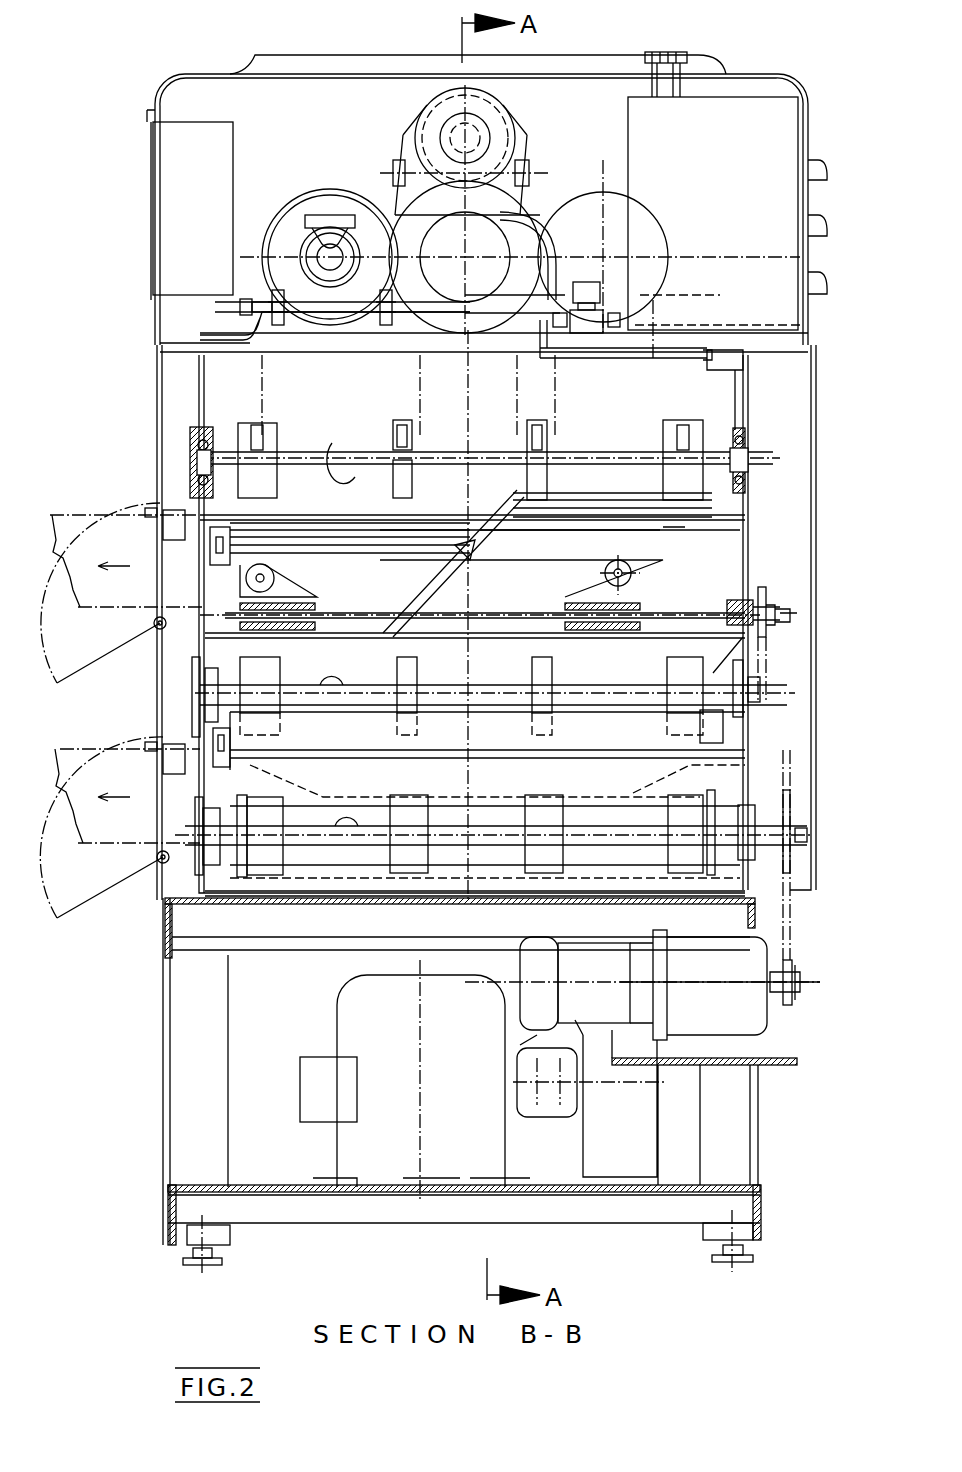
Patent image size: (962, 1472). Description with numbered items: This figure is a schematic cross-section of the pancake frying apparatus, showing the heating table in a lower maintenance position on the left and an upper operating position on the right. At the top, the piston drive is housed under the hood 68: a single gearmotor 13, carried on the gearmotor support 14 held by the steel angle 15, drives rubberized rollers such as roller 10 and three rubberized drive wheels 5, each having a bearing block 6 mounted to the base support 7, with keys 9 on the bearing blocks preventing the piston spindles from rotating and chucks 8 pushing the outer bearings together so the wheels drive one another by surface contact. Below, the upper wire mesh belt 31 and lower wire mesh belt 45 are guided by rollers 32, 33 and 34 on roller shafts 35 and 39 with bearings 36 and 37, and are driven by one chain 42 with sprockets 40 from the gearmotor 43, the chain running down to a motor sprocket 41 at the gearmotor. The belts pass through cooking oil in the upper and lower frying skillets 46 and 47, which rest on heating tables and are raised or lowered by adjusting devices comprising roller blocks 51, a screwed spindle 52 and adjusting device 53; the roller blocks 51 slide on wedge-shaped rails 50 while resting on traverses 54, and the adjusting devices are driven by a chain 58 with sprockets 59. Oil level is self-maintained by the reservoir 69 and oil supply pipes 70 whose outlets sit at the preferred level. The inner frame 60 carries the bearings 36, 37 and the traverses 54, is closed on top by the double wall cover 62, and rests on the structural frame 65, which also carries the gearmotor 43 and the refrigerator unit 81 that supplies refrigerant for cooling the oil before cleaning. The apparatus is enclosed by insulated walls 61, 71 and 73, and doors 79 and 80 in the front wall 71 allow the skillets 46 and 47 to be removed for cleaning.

The rubberized drive wheel 5 is at (310, 200).
The bearing block 6 is at (395, 215).
The base support 7 is at (268, 328).
The chuck 8 is at (240, 302).
The key 9 is at (322, 224).
The rubberized roller 10 is at (478, 165).
The gearmotor 13 is at (498, 112).
The gearmotor support 14 is at (562, 200).
The steel angle 15 is at (528, 345).
The upper wire mesh belt 31 is at (478, 495).
The roller 32 is at (257, 425).
The roller 33 is at (345, 455).
The roller 34 is at (259, 876).
The roller shaft 35 is at (475, 450).
The bearing 36 is at (747, 480).
The bearing 37 is at (192, 470).
The roller shaft 39 is at (455, 845).
The sprocket 40 is at (790, 805).
The motor pulley 41 is at (800, 1000).
The chain 42 is at (795, 942).
The gearmotor 43 is at (512, 1035).
The lower wire mesh belt 45 is at (340, 878).
The upper frying skillet 46 is at (715, 508).
The lower frying skillet 47 is at (750, 727).
The rail 50 is at (512, 562).
The roller block 51 is at (300, 583).
The screwed spindle 52 is at (610, 618).
The adjusting device 53 is at (660, 632).
The traverse 54 is at (420, 632).
The chain 58 is at (770, 660).
The sprocket 59 is at (768, 607).
The inner frame 60 is at (197, 650).
The insulated wall 61 is at (814, 470).
The double wall cover 62 is at (402, 338).
The structural frame 65 is at (228, 1002).
The hood 68 is at (147, 114).
The cooking oil reservoir 69 is at (788, 95).
The oil supply pipe 70 is at (655, 355).
The front wall 71 is at (157, 432).
The insulated wall 73 is at (165, 1025).
The door 79 is at (95, 905).
The door 80 is at (90, 672).
The refrigerator unit 81 is at (505, 1160).